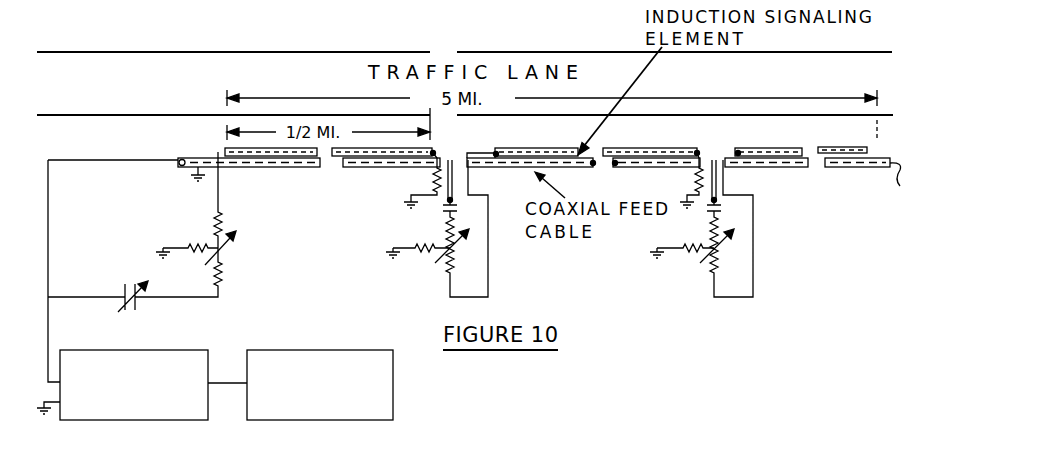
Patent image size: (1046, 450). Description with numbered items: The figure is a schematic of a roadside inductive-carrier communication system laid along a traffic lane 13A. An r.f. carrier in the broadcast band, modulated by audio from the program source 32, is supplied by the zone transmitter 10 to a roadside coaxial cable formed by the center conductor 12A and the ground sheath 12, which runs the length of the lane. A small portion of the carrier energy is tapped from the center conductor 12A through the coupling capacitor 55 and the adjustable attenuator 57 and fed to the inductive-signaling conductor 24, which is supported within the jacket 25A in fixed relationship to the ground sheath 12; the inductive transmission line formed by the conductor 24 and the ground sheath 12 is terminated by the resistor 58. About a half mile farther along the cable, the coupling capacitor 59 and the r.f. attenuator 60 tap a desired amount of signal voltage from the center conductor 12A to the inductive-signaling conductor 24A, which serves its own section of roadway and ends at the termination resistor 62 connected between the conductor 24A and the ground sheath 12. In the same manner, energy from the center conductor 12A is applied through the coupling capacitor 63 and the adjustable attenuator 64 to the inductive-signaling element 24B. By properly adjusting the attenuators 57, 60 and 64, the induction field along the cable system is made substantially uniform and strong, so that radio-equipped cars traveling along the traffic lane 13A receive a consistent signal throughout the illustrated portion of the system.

The traffic lane 13A is at (350, 62).
The coaxial center conductor 12A is at (174, 155).
The ground sheath 12 is at (272, 167).
The inductive-signaling conductor 24 is at (222, 150).
The jacket 25A is at (434, 150).
The inductive-signaling conductor 24A is at (484, 152).
The inductive-signaling element 24B is at (804, 151).
The adjustable attenuator 57 is at (228, 258).
The coupling capacitor 55 is at (122, 293).
The transmitter 10 is at (160, 350).
The program source 32 is at (305, 350).
The resistor 58 is at (432, 182).
The coupling capacitor 59 is at (443, 218).
The attenuator 60 is at (428, 258).
The termination resistor 62 is at (699, 178).
The coupling capacitor 63 is at (708, 216).
The adjustable attenuator 64 is at (705, 265).